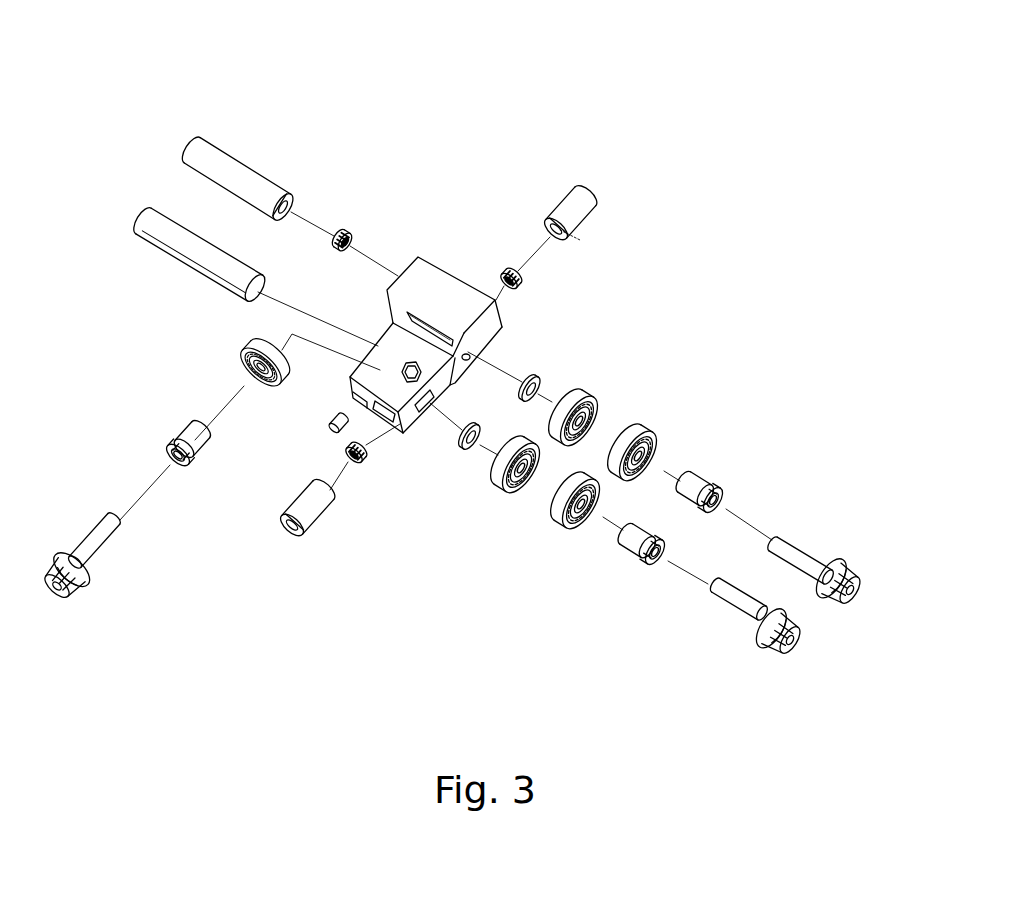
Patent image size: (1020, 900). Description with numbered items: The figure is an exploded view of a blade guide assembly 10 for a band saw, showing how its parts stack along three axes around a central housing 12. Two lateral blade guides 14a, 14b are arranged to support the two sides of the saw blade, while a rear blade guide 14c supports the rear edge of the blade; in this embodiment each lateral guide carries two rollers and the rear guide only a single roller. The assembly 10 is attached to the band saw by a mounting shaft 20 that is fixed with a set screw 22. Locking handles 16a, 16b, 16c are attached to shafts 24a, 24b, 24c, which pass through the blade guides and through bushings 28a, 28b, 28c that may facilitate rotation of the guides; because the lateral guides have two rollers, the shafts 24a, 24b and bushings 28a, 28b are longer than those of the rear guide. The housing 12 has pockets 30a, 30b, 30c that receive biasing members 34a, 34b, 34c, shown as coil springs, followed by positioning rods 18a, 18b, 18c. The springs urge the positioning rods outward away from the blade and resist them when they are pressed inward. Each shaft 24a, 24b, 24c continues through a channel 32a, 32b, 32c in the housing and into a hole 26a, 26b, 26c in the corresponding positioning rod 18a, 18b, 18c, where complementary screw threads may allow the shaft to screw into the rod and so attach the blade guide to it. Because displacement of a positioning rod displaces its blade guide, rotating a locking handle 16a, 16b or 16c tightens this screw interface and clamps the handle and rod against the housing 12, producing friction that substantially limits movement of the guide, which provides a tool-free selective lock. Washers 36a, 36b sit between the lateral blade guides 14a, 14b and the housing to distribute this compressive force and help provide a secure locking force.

The blade guide assembly 10 is at (574, 118).
The housing 12 is at (429, 285).
The lateral blade guide 14a is at (590, 488).
The lateral blade guide 14b is at (582, 392).
The rear blade guide 14c is at (257, 347).
The locking handle 16a is at (786, 650).
The locking handle 16b is at (841, 566).
The locking handle 16c is at (72, 588).
The positioning rod 18a is at (302, 509).
The positioning rod 18b is at (598, 206).
The positioning rod 18c is at (235, 175).
The mounting shaft 20 is at (220, 274).
The set screw 22 is at (327, 428).
The shaft 24a is at (723, 594).
The shaft 24b is at (794, 546).
The shaft 24c is at (91, 542).
The hole 26a is at (323, 514).
The hole 26b is at (578, 227).
The hole 26c is at (272, 210).
The bushing 28a is at (628, 539).
The bushing 28b is at (706, 482).
The bushing 28c is at (175, 440).
The pocket 30a is at (385, 420).
The pocket 30b is at (496, 302).
The pocket 30c is at (397, 268).
The channel 32a is at (416, 415).
The channel 32b is at (468, 357).
The channel 32c is at (441, 326).
The biasing member 34a is at (361, 462).
The biasing member 34b is at (522, 282).
The biasing member 34c is at (340, 232).
The washer 36a is at (469, 448).
The washer 36b is at (538, 384).